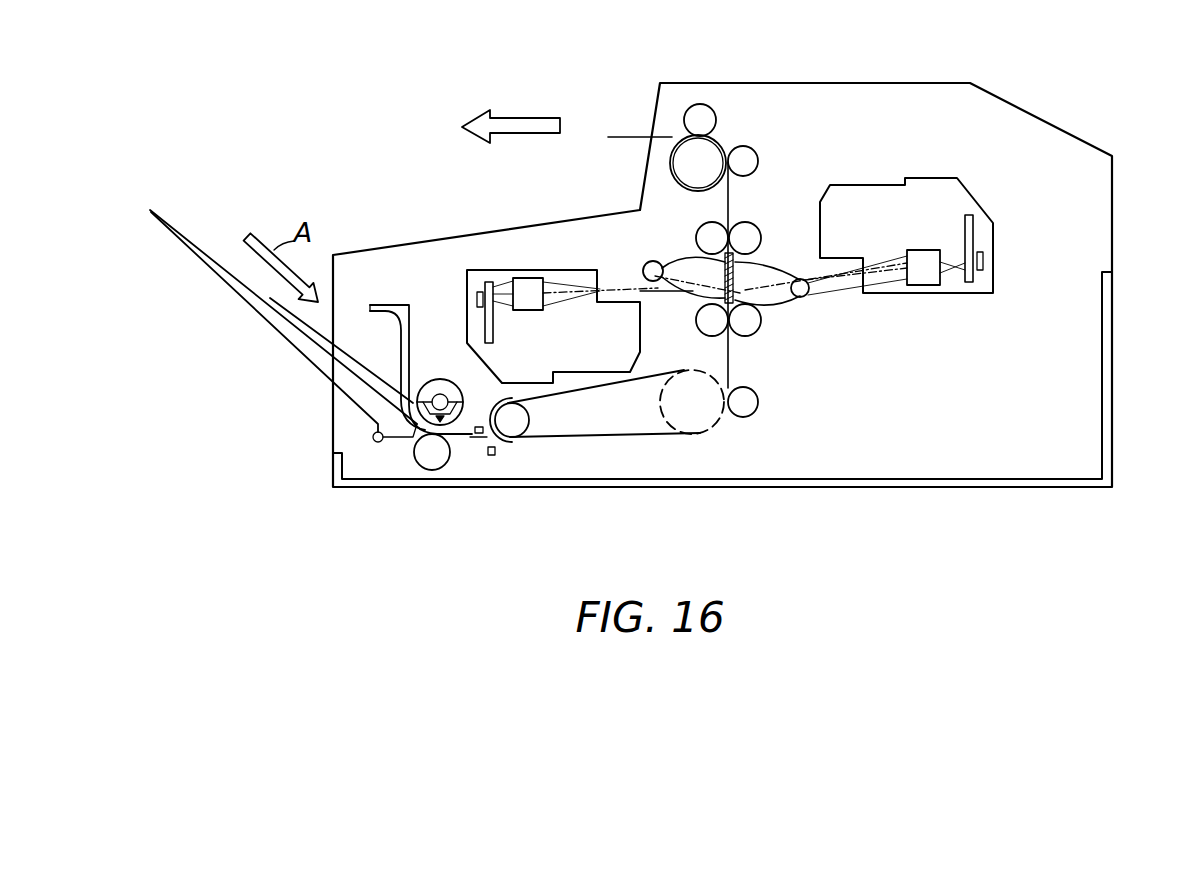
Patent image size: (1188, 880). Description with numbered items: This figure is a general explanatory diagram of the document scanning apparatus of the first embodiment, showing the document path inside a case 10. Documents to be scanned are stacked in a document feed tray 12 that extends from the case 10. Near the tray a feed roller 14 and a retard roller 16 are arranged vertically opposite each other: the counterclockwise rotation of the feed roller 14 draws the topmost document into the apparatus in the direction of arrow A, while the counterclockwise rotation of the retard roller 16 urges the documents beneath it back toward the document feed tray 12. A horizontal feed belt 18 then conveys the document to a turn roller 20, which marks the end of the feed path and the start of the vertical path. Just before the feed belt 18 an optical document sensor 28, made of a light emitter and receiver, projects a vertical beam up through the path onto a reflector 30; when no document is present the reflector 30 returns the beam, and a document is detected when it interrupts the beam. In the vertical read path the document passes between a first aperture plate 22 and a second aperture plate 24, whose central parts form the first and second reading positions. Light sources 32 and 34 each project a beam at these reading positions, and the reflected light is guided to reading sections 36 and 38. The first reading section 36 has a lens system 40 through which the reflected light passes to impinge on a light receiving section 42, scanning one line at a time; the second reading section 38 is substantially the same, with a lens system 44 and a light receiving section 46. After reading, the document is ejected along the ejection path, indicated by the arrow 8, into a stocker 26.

The direction arrow 8 is at (522, 118).
The case 10 is at (1114, 213).
The document feed tray 12 is at (302, 353).
The feed roller 14 is at (440, 388).
The retard roller 16 is at (431, 461).
The feed belt 18 is at (578, 440).
The turn roller 20 is at (697, 438).
The first aperture plate 22 is at (712, 263).
The second aperture plate 24 is at (764, 265).
The stocker 26 is at (542, 224).
The document sensor 28 is at (490, 456).
The reflector 30 is at (480, 437).
The light source 32 is at (648, 264).
The light source 34 is at (807, 296).
The first reading section 36 is at (573, 270).
The second reading section 38 is at (962, 178).
The lens system 40 is at (528, 271).
The light receiving section 42 is at (476, 292).
The lens system 44 is at (933, 286).
The light receiving section 46 is at (982, 287).